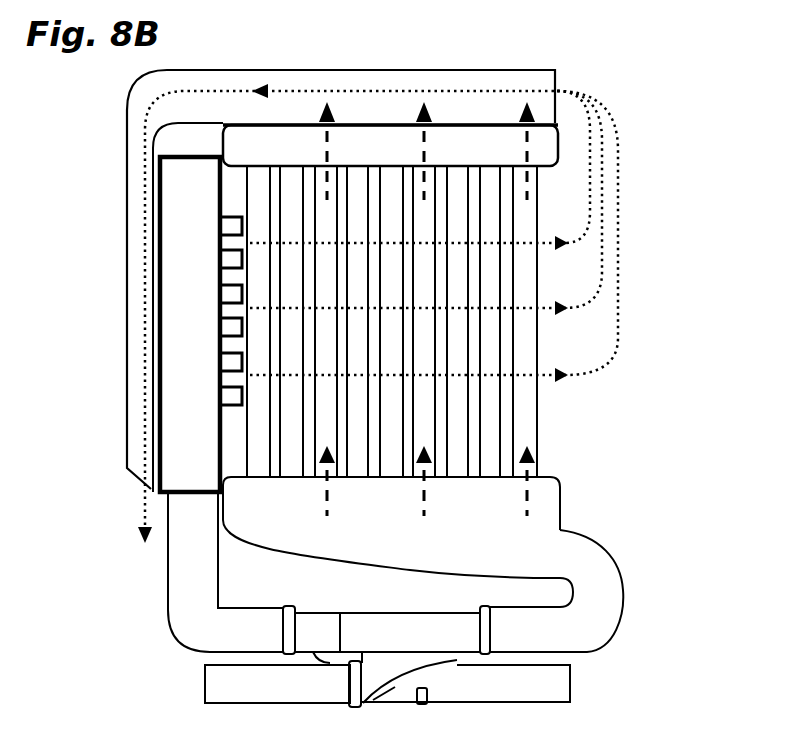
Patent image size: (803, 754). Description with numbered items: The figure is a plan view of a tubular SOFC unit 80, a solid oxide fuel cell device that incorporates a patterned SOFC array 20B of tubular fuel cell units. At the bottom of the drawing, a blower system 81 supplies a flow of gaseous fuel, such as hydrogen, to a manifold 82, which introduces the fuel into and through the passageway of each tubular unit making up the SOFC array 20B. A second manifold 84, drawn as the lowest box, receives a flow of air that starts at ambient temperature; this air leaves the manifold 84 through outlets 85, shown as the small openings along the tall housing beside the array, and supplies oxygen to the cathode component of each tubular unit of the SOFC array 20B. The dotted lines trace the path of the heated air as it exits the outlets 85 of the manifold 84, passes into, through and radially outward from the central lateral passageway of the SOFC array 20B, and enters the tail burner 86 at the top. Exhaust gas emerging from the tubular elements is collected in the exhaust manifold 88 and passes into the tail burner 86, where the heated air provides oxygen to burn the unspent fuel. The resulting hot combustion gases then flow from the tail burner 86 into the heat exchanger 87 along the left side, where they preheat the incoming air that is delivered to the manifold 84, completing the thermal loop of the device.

The tubular SOFC unit 80 is at (637, 200).
The tail burner 86 is at (160, 87).
The heat exchanger 87 is at (135, 367).
The exhaust manifold 88 is at (250, 145).
The outlets 85 is at (190, 273).
The SOFC array 20B is at (523, 435).
The manifold 82 is at (398, 542).
The blower system 81 is at (633, 590).
The manifold 84 is at (572, 688).